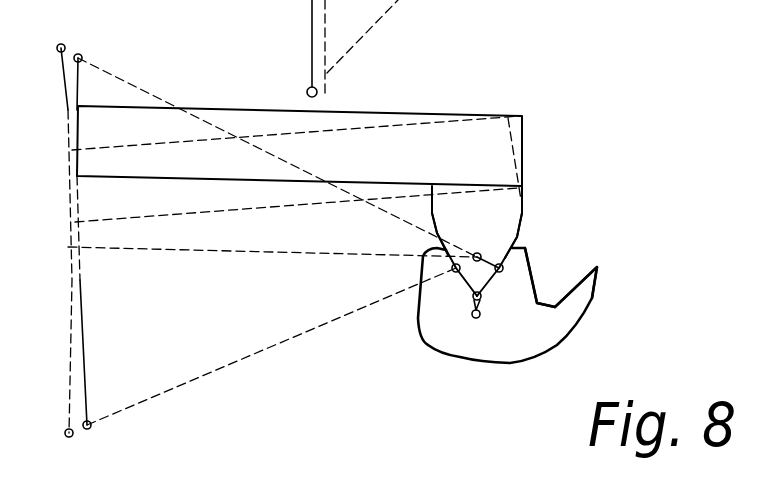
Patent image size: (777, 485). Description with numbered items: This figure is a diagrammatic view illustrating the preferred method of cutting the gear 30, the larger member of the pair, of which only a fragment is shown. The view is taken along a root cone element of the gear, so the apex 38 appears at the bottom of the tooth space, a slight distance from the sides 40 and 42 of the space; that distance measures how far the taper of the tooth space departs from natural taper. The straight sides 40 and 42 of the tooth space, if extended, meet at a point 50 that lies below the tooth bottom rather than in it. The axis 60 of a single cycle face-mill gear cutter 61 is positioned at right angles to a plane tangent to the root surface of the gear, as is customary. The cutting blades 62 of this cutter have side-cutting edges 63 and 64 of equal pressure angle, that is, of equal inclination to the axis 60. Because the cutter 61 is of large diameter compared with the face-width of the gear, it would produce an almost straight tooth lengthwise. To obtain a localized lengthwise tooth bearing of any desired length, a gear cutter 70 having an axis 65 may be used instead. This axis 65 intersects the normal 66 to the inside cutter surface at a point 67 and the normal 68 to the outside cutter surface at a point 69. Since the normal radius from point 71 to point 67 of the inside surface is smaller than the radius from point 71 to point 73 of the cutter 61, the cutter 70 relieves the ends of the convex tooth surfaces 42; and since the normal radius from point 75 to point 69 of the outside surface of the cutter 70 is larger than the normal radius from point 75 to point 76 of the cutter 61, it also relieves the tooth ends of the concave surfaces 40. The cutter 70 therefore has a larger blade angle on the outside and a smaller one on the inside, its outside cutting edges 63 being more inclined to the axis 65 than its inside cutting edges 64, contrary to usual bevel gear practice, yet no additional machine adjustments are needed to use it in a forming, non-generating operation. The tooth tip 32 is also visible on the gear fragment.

The gear 30 is at (528, 343).
The tooth tip 32 is at (603, 266).
The apex 38 is at (470, 301).
The side of tooth space 40 is at (499, 272).
The side of tooth space 42 is at (457, 272).
The point of intersection 50 is at (480, 318).
The axis 60 is at (72, 330).
The face-mill gear cutter 61 is at (525, 132).
The cutting blades 62 is at (522, 195).
The outside side-cutting edge 63 is at (517, 232).
The inside side-cutting edge 64 is at (435, 236).
The axis 65 is at (82, 317).
The normal to inside cutter surface 66 is at (265, 350).
The point 67 is at (92, 430).
The normal to outside cutter surface 68 is at (138, 88).
The point 69 is at (63, 44).
The gear cutter 70 is at (417, 125).
The point 71 is at (452, 268).
The point 73 is at (67, 438).
The point 75 is at (502, 268).
The point 76 is at (83, 55).